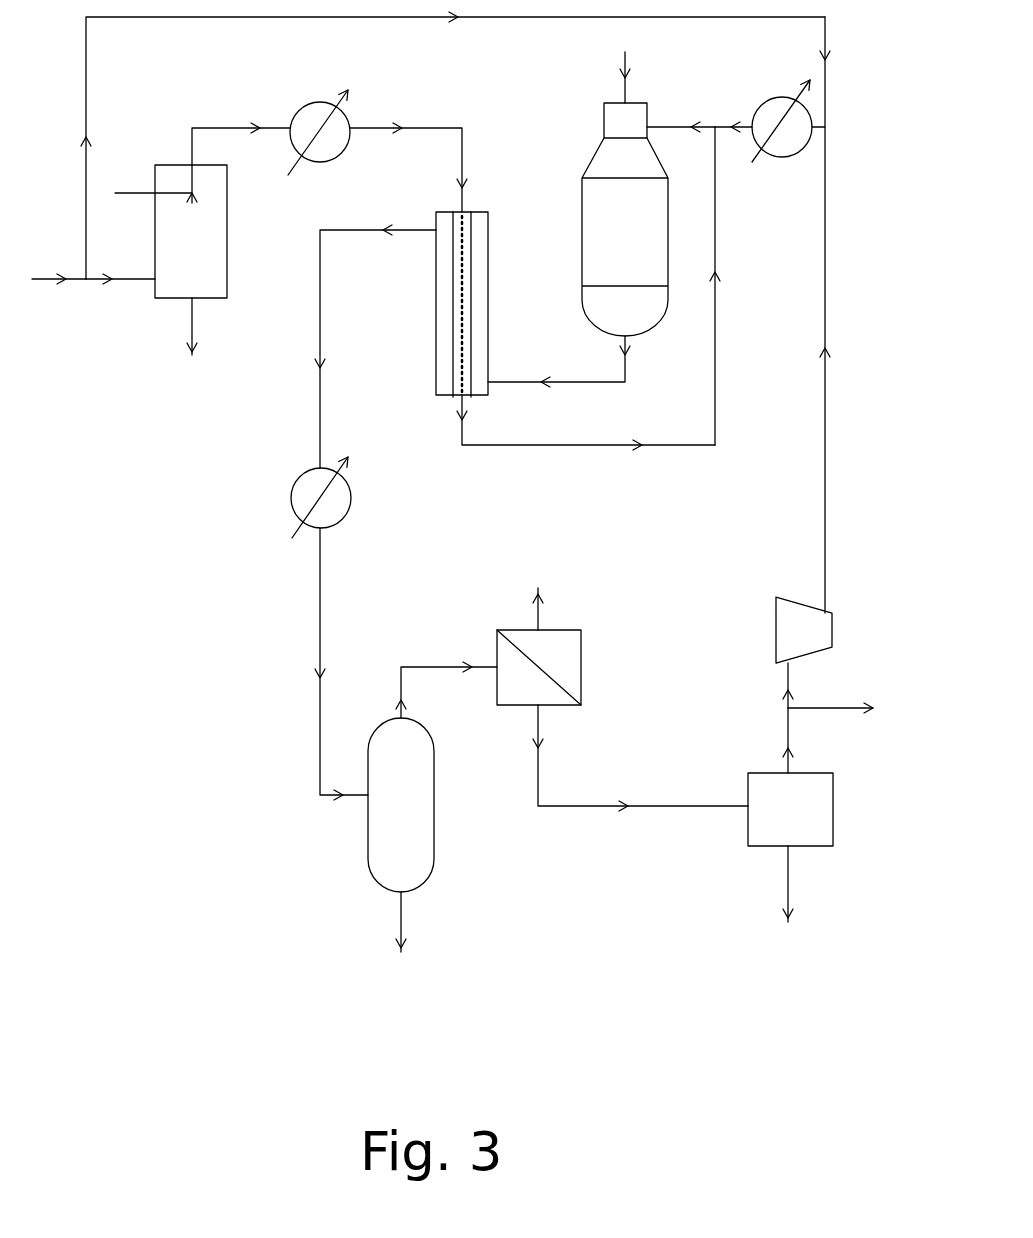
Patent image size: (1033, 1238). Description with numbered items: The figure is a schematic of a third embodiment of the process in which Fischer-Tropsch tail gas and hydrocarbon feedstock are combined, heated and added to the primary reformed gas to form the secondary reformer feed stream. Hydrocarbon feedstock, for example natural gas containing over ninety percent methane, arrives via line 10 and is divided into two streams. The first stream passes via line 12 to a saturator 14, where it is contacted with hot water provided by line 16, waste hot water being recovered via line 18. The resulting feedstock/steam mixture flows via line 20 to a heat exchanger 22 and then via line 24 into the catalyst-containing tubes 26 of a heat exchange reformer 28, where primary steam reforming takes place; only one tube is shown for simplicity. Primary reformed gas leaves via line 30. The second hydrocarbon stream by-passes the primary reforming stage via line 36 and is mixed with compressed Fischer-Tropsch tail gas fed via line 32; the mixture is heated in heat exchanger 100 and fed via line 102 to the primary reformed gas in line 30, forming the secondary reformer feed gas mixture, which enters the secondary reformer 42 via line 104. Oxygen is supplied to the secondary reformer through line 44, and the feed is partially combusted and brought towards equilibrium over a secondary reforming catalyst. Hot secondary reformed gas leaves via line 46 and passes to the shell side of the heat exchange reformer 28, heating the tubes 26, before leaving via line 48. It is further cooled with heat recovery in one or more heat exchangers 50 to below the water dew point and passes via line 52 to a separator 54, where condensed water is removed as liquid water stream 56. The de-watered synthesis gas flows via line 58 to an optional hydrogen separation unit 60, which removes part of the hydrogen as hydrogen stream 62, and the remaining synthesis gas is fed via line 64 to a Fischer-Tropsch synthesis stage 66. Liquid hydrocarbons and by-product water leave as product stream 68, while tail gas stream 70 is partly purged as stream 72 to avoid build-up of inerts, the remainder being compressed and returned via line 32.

The line 10 is at (77, 278).
The line 12 is at (118, 278).
The saturator 14 is at (228, 208).
The line 16 is at (140, 192).
The line 18 is at (192, 316).
The line 20 is at (226, 126).
The heat exchanger 22 is at (345, 118).
The line 24 is at (452, 126).
The catalyst-containing tubes 26 is at (465, 288).
The heat exchange reformer 28 is at (437, 349).
The line 30 is at (460, 437).
The line 32 is at (822, 441).
The line 36 is at (311, 20).
The secondary reformer 42 is at (670, 208).
The line 44 is at (622, 90).
The line 46 is at (586, 380).
The line 48 is at (322, 248).
The heat exchangers 50 is at (338, 513).
The line 52 is at (322, 612).
The separator 54 is at (434, 808).
The liquid water stream 56 is at (404, 923).
The line 58 is at (443, 668).
The hydrogen separation unit 60 is at (570, 705).
The hydrogen stream 62 is at (537, 610).
The line 64 is at (538, 764).
The Fischer-Tropsch synthesis stage 66 is at (833, 802).
The product stream 68 is at (790, 892).
The tail gas stream 70 is at (792, 762).
The purge stream 72 is at (848, 706).
The heat exchanger 100 is at (768, 100).
The line 102 is at (736, 124).
The line 104 is at (675, 124).